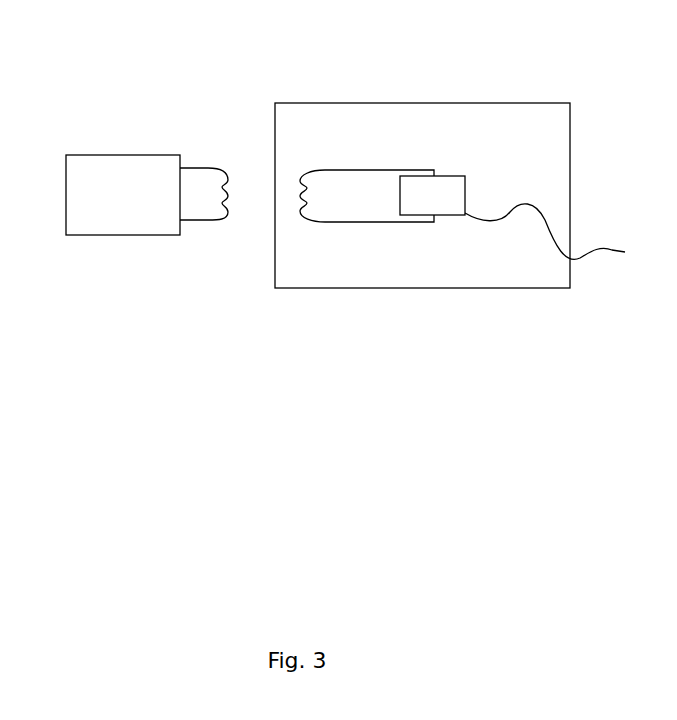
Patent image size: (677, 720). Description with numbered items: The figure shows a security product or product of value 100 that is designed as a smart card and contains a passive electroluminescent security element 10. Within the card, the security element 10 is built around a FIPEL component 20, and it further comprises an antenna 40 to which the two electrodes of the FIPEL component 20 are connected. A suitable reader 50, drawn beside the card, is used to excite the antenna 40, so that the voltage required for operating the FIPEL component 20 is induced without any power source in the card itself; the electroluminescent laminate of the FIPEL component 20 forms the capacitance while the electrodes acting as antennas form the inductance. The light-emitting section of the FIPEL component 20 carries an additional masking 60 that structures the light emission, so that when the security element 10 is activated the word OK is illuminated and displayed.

The security product or product of value 100 is at (520, 115).
The reader 50 is at (122, 128).
The passive electroluminescent security element 10 is at (332, 246).
The FIPEL component 20 is at (472, 193).
The antenna 40 is at (344, 170).
The masking 60 is at (562, 236).